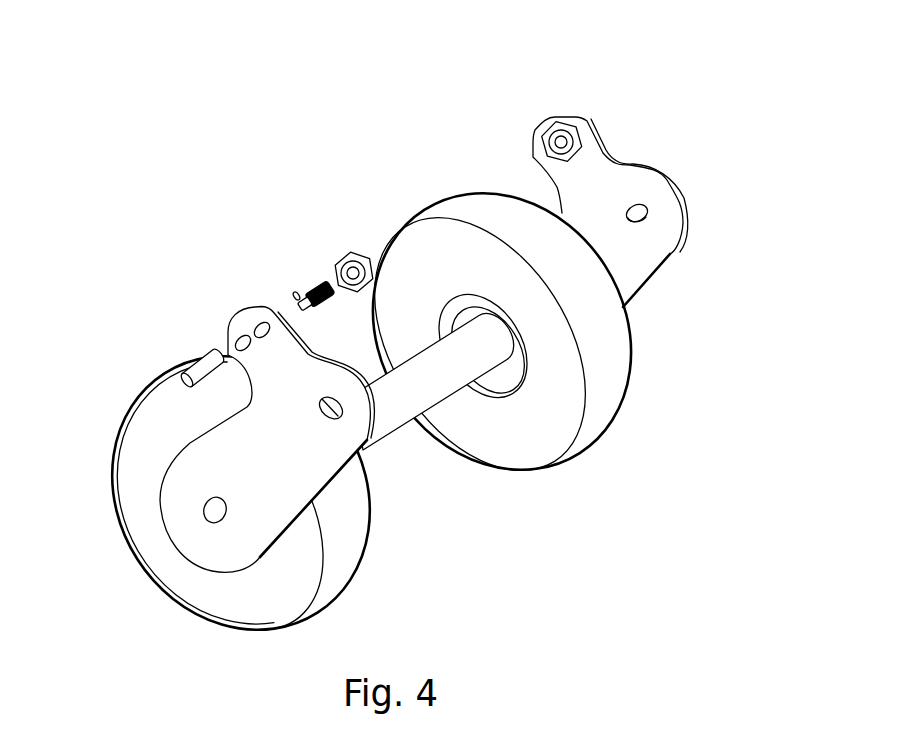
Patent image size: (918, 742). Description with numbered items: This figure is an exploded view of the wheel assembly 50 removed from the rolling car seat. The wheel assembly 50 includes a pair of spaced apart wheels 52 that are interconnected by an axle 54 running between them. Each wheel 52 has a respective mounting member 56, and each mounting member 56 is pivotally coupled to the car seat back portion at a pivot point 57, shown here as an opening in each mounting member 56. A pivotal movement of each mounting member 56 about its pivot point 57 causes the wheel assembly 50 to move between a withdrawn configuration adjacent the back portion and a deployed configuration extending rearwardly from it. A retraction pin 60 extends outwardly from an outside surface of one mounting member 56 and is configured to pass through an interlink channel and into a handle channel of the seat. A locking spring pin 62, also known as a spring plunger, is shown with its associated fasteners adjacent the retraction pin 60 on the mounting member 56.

The wheel assembly 50 is at (406, 381).
The wheel 52 is at (253, 610).
The axle 54 is at (412, 382).
The mounting member 56 is at (290, 490).
The pivot point 57 is at (328, 410).
The retraction pin 60 is at (202, 368).
The locking spring pin 62 is at (308, 285).